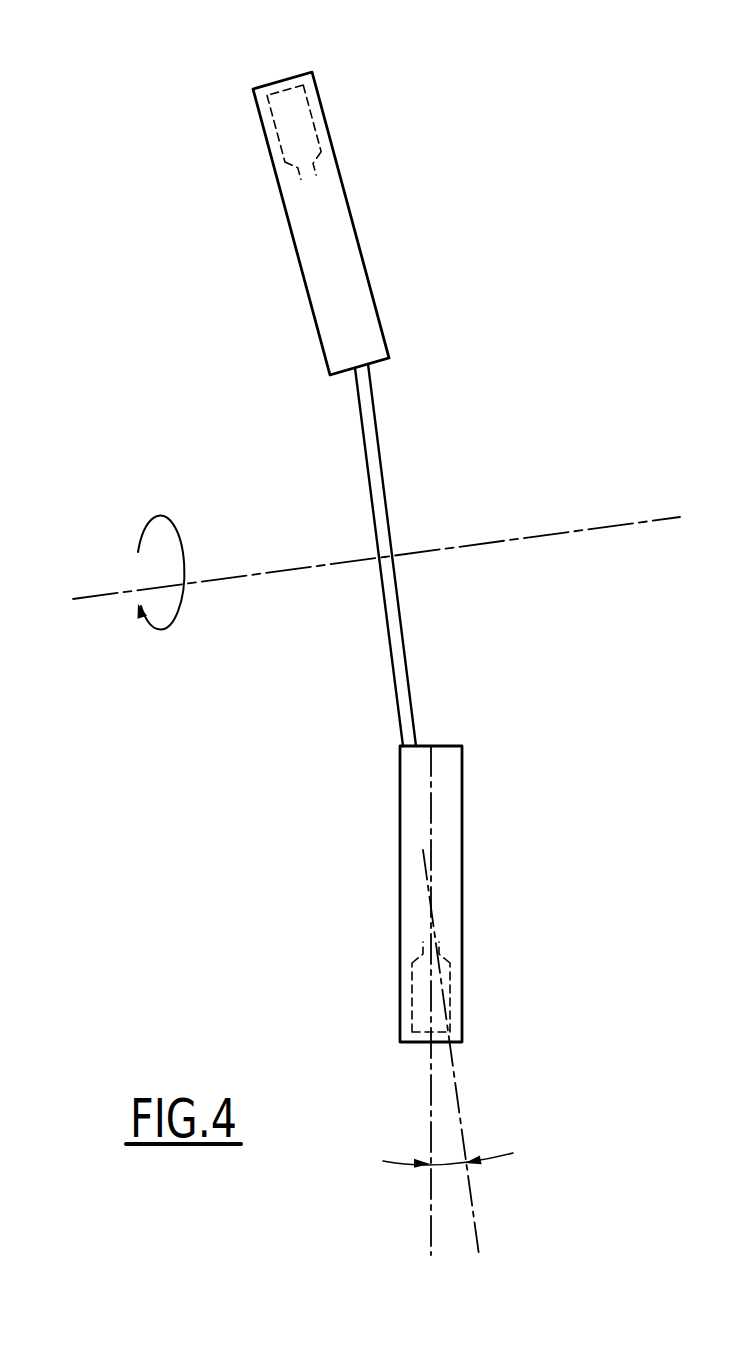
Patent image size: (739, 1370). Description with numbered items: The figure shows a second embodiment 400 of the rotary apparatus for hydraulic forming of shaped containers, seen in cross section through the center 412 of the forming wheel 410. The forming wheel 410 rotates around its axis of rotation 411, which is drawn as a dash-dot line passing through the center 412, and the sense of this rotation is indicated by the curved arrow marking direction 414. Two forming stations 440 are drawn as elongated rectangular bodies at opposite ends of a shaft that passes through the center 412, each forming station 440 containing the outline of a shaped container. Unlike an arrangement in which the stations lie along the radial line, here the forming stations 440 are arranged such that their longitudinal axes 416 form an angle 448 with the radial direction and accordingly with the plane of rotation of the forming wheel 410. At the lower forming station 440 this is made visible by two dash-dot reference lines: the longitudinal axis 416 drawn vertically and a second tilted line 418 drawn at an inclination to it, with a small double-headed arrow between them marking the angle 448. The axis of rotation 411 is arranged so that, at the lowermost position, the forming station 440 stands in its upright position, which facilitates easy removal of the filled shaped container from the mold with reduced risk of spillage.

The second embodiment of the rotary apparatus 400 is at (197, 66).
The forming wheel 410 is at (378, 457).
The axis of rotation 411 is at (573, 531).
The center of the forming wheel 412 is at (385, 557).
The direction of rotation 414 is at (168, 643).
The longitudinal axis of the forming station 416 is at (430, 1238).
The tilted axis 418 is at (477, 1237).
The forming station 440 is at (327, 125).
The angle 448 is at (448, 1165).